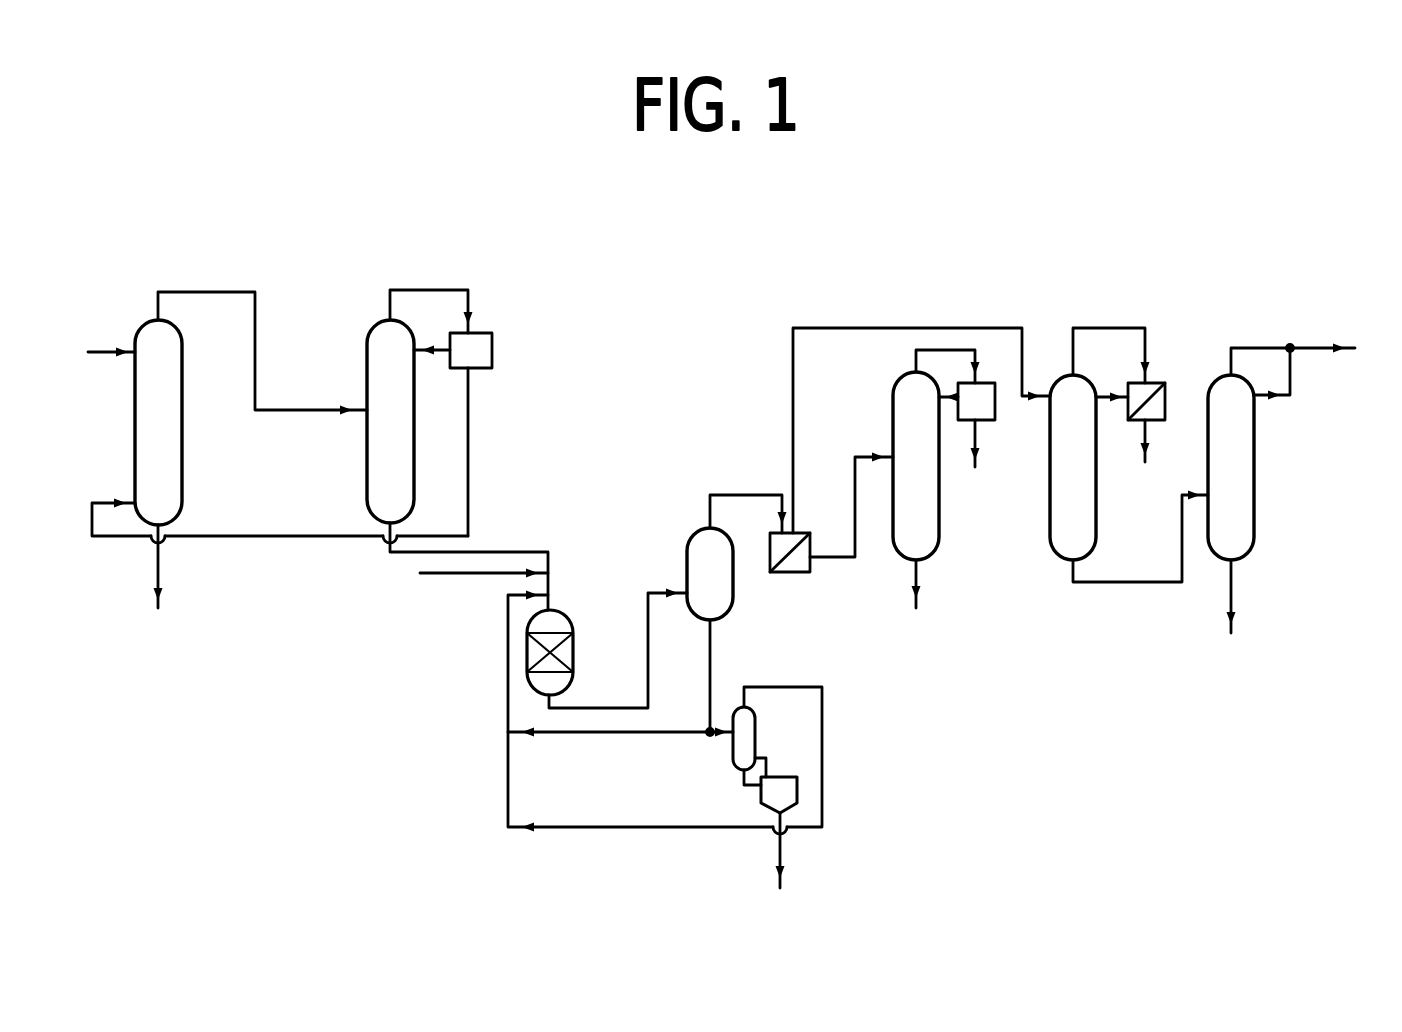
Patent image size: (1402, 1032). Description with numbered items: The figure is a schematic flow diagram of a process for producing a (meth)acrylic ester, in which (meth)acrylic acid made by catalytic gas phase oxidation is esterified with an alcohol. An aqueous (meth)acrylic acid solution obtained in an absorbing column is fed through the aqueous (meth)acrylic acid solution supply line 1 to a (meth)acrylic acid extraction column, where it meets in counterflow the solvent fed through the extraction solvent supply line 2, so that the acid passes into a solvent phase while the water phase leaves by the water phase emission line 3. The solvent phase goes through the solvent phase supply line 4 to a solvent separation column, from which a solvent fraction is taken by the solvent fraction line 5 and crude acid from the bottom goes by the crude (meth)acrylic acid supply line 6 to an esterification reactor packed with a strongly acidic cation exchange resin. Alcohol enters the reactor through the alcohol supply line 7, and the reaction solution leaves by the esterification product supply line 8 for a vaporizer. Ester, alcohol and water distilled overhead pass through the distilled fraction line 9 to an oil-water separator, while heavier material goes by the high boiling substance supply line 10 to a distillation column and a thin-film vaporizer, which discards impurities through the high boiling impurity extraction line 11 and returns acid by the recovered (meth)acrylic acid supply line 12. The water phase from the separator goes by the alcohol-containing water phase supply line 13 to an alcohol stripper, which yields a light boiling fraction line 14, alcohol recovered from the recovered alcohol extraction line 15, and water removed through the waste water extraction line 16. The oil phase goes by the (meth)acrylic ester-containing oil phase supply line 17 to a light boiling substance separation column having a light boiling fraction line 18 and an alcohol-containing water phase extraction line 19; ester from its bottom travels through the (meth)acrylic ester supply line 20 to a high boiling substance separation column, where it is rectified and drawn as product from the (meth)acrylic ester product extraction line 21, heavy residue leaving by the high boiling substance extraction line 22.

The aqueous (meth)acrylic acid solution supply line 1 is at (141, 336).
The extraction solvent supply line 2 is at (373, 336).
The water phase emission line 3 is at (563, 619).
The solvent phase supply line 4 is at (699, 545).
The solvent fraction line 5 is at (736, 704).
The crude (meth)acrylic acid supply line 6 is at (602, 668).
The alcohol supply line 7 is at (808, 548).
The esterification product supply line 8 is at (904, 387).
The distilled fraction line 9 is at (1060, 385).
The high boiling substance supply line 10 is at (1221, 386).
The high boiling impurity extraction line 11 is at (783, 869).
The recovered (meth)acrylic acid supply line 12 is at (642, 713).
The alcohol-containing water phase supply line 13 is at (851, 491).
The light boiling fraction line 14 is at (963, 382).
The recovered alcohol extraction line 15 is at (975, 461).
The waste water extraction line 16 is at (917, 604).
The (meth)acrylic ester-containing oil phase supply line 17 is at (921, 414).
The light boiling fraction line 18 is at (1127, 374).
The alcohol-containing water phase extraction line 19 is at (1150, 459).
The (meth)acrylic ester supply line 20 is at (1140, 537).
The (meth)acrylic ester product extraction line 21 is at (1314, 367).
The high boiling substance extraction line 22 is at (1232, 615).